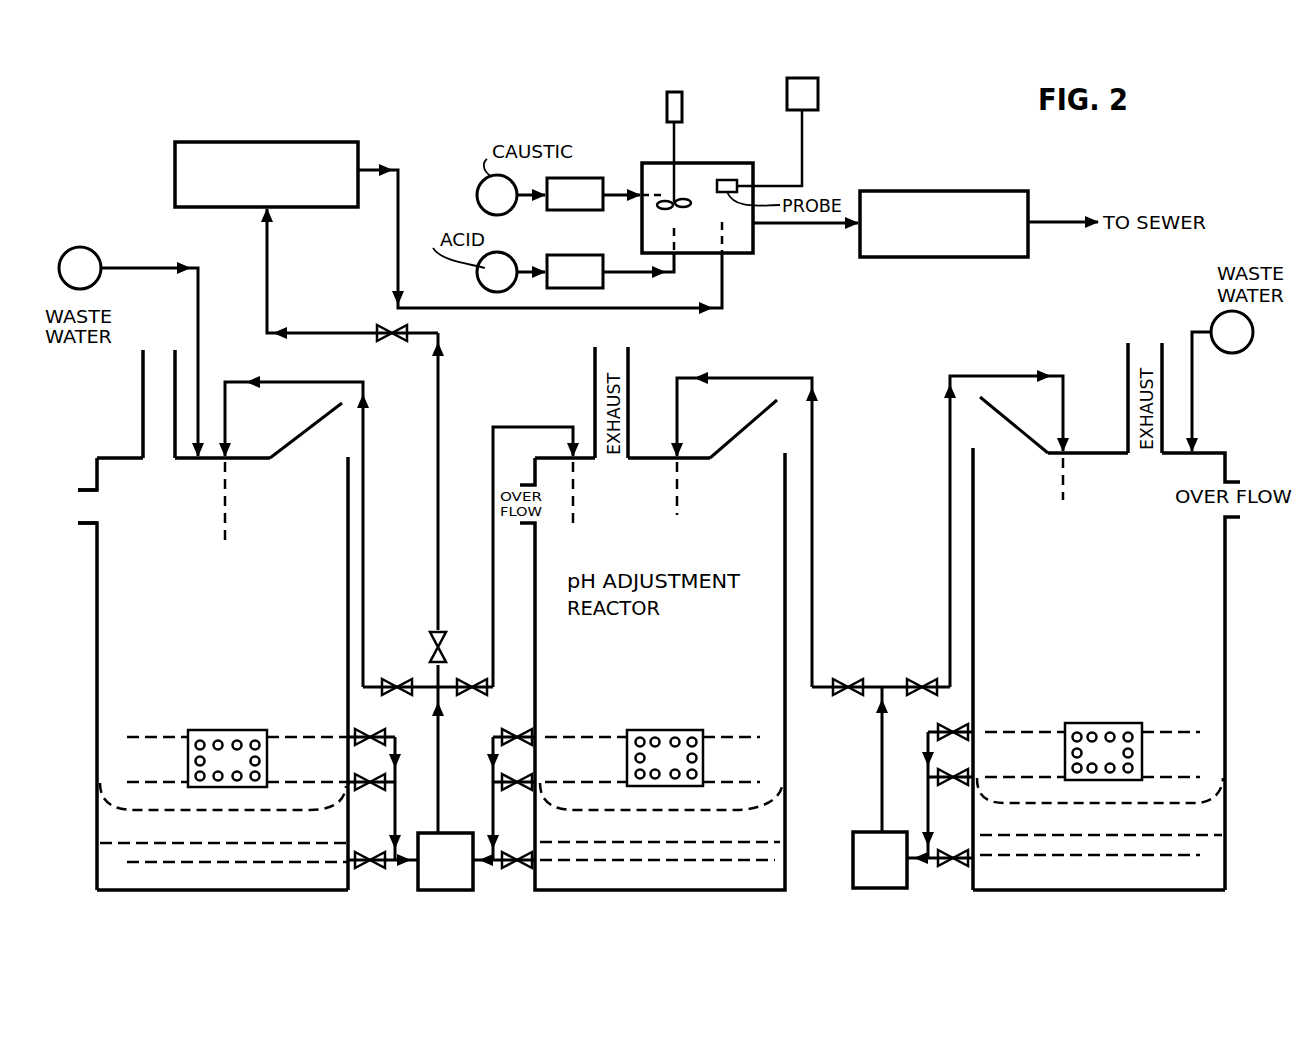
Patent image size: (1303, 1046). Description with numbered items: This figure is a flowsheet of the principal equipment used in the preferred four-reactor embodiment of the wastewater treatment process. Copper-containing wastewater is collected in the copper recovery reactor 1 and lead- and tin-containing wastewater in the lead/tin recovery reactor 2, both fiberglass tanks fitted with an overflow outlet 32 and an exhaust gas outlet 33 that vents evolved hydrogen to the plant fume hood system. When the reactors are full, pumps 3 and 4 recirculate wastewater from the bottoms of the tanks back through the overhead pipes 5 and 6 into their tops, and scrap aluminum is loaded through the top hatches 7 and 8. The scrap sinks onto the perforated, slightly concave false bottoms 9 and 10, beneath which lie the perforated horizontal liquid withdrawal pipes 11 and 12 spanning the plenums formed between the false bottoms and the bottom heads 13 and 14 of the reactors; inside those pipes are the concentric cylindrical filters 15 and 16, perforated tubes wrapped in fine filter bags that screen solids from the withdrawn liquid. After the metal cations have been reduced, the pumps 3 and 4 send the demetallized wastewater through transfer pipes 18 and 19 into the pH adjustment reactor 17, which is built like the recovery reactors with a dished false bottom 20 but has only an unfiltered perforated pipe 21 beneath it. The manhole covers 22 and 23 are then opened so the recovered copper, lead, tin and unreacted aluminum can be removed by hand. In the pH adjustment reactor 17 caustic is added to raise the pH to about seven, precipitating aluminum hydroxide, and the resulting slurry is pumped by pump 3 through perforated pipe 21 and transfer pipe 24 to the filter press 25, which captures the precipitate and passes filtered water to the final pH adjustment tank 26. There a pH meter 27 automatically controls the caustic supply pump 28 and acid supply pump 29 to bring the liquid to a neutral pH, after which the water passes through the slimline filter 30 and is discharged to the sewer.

The copper recovery reactor 1 is at (97, 597).
The lead/tin recovery reactor 2 is at (1225, 633).
The pump 3 is at (427, 877).
The pump 4 is at (893, 880).
The overhead pipe 5 is at (440, 385).
The overhead pipe 6 is at (1001, 376).
The top hatch 7 is at (312, 426).
The top hatch 8 is at (1005, 411).
The perforated false bottom 9 is at (118, 810).
The perforated false bottom 10 is at (1225, 805).
The liquid withdrawal pipe 11 is at (142, 843).
The liquid withdrawal pipe 12 is at (1215, 838).
The bottom head 13 is at (155, 890).
The bottom head 14 is at (1198, 890).
The concentric cylindrical filter 15 is at (158, 862).
The concentric cylindrical filter 16 is at (1185, 858).
The pH adjustment reactor 17 is at (785, 746).
The transfer pipe 18 is at (492, 611).
The transfer pipe 19 is at (813, 603).
The dished false bottom 20 is at (765, 812).
The perforated pipe 21 is at (765, 845).
The manhole cover 22 is at (222, 731).
The manhole cover 23 is at (1122, 725).
The transfer pipe 24 is at (437, 306).
The filter press 25 is at (192, 142).
The final pH adjustment tank 26 is at (740, 242).
The pH meter 27 is at (787, 88).
The caustic supply pump 28 is at (597, 178).
The acid supply pump 29 is at (565, 255).
The slimline filter 30 is at (960, 191).
The overflow outlet 32 is at (82, 488).
The exhaust gas outlet 33 is at (143, 409).